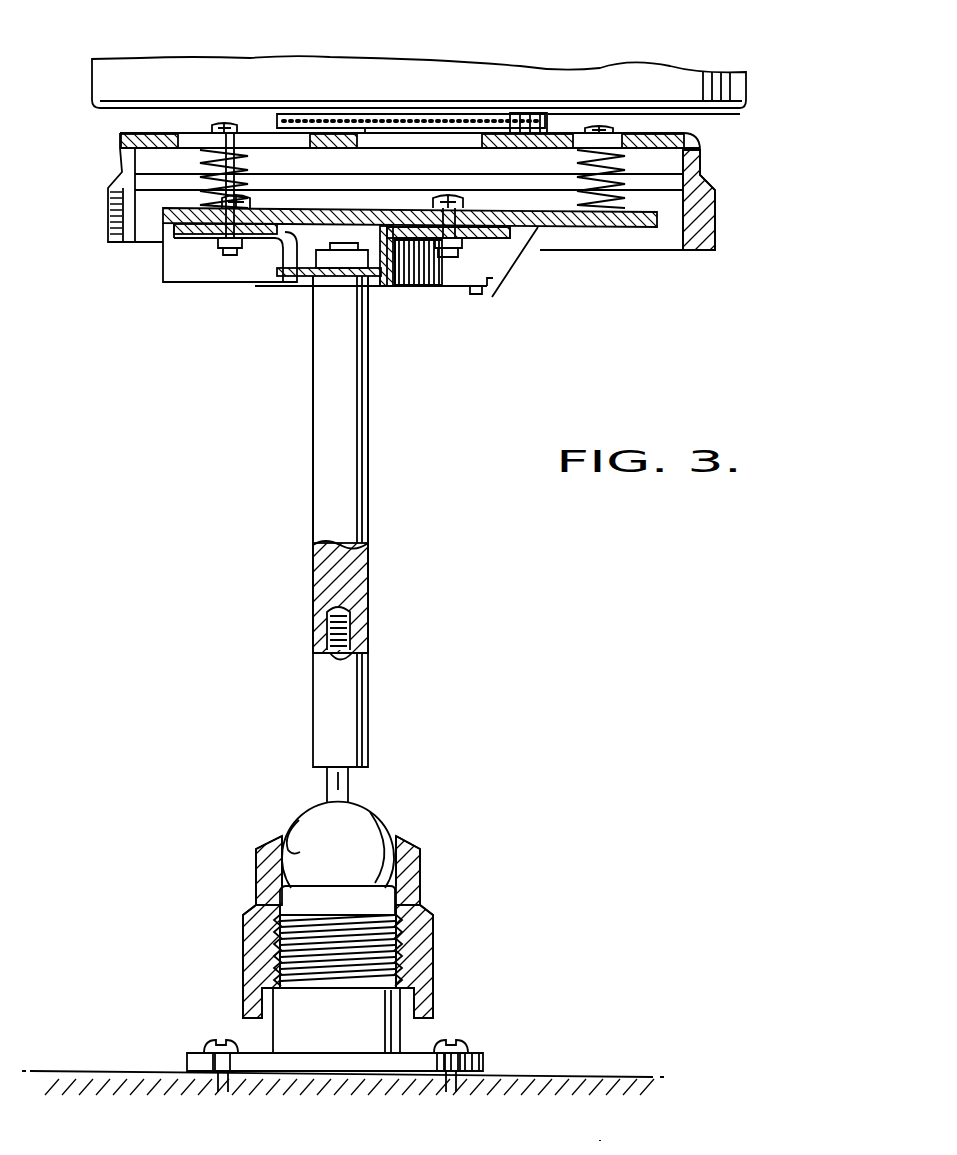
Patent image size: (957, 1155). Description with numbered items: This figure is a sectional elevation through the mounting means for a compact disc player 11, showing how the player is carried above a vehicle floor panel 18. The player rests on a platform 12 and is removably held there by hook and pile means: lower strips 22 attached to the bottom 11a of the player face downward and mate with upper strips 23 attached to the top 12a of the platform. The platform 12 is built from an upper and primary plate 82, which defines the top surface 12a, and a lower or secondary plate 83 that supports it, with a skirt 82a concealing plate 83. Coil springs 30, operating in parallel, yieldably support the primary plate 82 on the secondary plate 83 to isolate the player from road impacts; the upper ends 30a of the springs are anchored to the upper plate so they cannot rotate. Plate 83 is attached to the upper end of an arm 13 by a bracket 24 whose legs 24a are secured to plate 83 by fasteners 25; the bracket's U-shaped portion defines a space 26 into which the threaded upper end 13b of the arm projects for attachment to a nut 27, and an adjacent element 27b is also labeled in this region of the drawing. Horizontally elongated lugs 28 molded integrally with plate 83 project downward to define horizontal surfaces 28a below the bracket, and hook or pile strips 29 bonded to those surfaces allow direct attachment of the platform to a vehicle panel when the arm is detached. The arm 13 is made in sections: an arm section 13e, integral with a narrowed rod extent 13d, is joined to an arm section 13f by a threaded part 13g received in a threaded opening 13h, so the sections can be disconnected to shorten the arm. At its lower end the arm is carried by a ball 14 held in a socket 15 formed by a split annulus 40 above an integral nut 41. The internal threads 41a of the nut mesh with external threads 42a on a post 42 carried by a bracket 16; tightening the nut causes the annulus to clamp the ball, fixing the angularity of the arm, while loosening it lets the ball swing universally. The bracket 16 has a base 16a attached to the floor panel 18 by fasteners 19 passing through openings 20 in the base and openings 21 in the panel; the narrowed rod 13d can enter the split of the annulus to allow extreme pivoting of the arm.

The compact disc player 11 is at (752, 74).
The bottom of the player 11a is at (634, 118).
The platform 12 is at (722, 186).
The top of the platform 12a is at (515, 133).
The arm 13 is at (298, 503).
The threaded upper end of the arm 13b is at (342, 248).
The narrowed rod extent of the arm 13d is at (326, 786).
The arm section 13e is at (348, 677).
The arm section 13f is at (355, 557).
The threaded part 13g is at (328, 628).
The threaded opening 13h is at (333, 655).
The ball 14 is at (368, 812).
The socket 15 is at (298, 830).
The bracket 16 is at (460, 1000).
The base 16a is at (343, 1063).
The floor panel 18 is at (77, 1069).
The fasteners 19 is at (208, 1043).
The openings 20 is at (215, 1055).
The openings 21 is at (226, 1084).
The lower strips 22 is at (416, 113).
The upper strips 23 is at (373, 128).
The bracket 24 is at (288, 270).
The legs 24a is at (190, 245).
The fasteners 25 is at (230, 252).
The space 26 is at (305, 270).
The nut 27 is at (332, 277).
The column wall 27b is at (393, 292).
The lugs 28 is at (500, 255).
The horizontal surfaces 28a is at (470, 294).
The hook or pile strips 29 is at (420, 292).
The coil springs 30 is at (205, 178).
The upper ends of the springs 30a is at (670, 1145).
The split annulus 40 is at (412, 865).
The nut 41 is at (436, 935).
The internal threads 41a is at (305, 924).
The post 42 is at (338, 1031).
The external threads 42a is at (283, 910).
The upper and primary plate 82 is at (158, 165).
The skirt 82a is at (718, 217).
The lower or secondary plate 83 is at (620, 228).